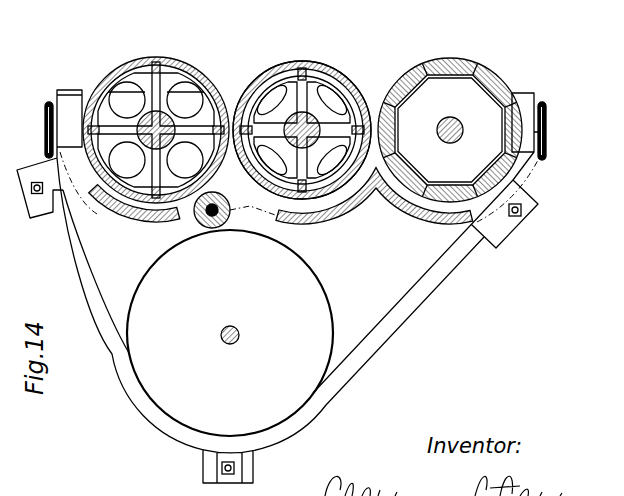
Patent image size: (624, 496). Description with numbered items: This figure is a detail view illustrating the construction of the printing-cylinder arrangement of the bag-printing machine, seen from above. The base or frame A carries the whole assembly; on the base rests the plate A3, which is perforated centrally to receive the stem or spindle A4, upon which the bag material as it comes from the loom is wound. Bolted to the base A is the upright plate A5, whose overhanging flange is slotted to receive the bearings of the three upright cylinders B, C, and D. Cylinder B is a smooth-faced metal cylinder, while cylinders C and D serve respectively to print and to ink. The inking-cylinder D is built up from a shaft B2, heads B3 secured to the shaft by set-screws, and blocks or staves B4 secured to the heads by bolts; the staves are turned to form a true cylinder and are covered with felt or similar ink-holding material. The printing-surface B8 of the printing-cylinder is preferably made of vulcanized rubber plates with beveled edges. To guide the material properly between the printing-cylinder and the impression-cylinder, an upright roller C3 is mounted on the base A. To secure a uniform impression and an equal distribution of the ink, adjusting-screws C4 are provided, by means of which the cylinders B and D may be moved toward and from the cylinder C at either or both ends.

The base or frame A is at (280, 286).
The plate A3 is at (230, 333).
The stem or spindle A4 is at (237, 343).
The upright plate A5 is at (361, 195).
The cylinder B is at (150, 58).
The printing-surface B8 is at (270, 63).
The cylinder C is at (302, 117).
The upright roller C3 is at (213, 228).
The adjusting-screws C4 is at (45, 120).
The cylinder D is at (450, 113).
The blocks or staves B4 is at (483, 67).
The heads B3 is at (450, 130).
The shaft B2 is at (447, 119).